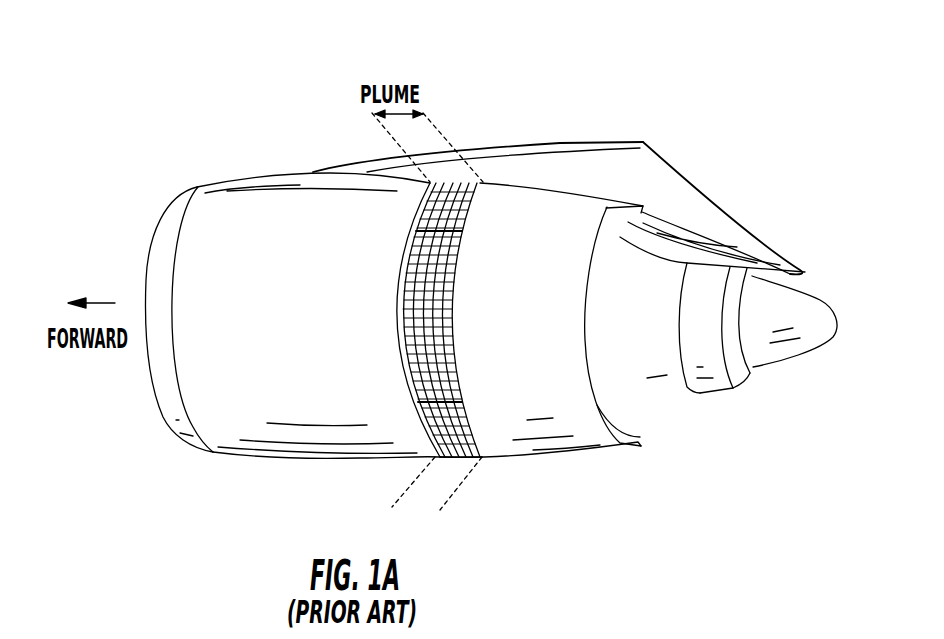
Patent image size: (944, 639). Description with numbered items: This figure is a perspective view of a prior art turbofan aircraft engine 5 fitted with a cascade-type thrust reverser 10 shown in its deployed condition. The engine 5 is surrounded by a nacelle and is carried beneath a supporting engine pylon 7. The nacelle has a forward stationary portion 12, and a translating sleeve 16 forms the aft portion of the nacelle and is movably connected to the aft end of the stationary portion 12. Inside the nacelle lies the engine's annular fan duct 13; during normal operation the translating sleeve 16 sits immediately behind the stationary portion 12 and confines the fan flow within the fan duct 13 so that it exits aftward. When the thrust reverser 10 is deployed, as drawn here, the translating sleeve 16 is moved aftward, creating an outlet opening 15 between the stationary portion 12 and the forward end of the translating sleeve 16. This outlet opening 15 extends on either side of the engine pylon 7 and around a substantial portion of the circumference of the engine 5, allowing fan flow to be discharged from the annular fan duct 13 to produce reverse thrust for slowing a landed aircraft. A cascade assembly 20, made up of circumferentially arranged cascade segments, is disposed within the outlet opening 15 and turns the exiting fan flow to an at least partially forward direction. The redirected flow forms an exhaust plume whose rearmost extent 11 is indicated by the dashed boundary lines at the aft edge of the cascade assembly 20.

The turbofan aircraft engine 5 is at (243, 75).
The engine pylon 7 is at (640, 142).
The cascade-type thrust reverser 10 is at (530, 176).
The rearmost extent of the exhaust plume 11 is at (435, 122).
The stationary portion of the nacelle 12 is at (258, 208).
The annular fan duct 13 is at (638, 420).
The outlet opening 15 is at (450, 183).
The translating sleeve 16 is at (563, 457).
The cascade assembly 20 is at (460, 460).